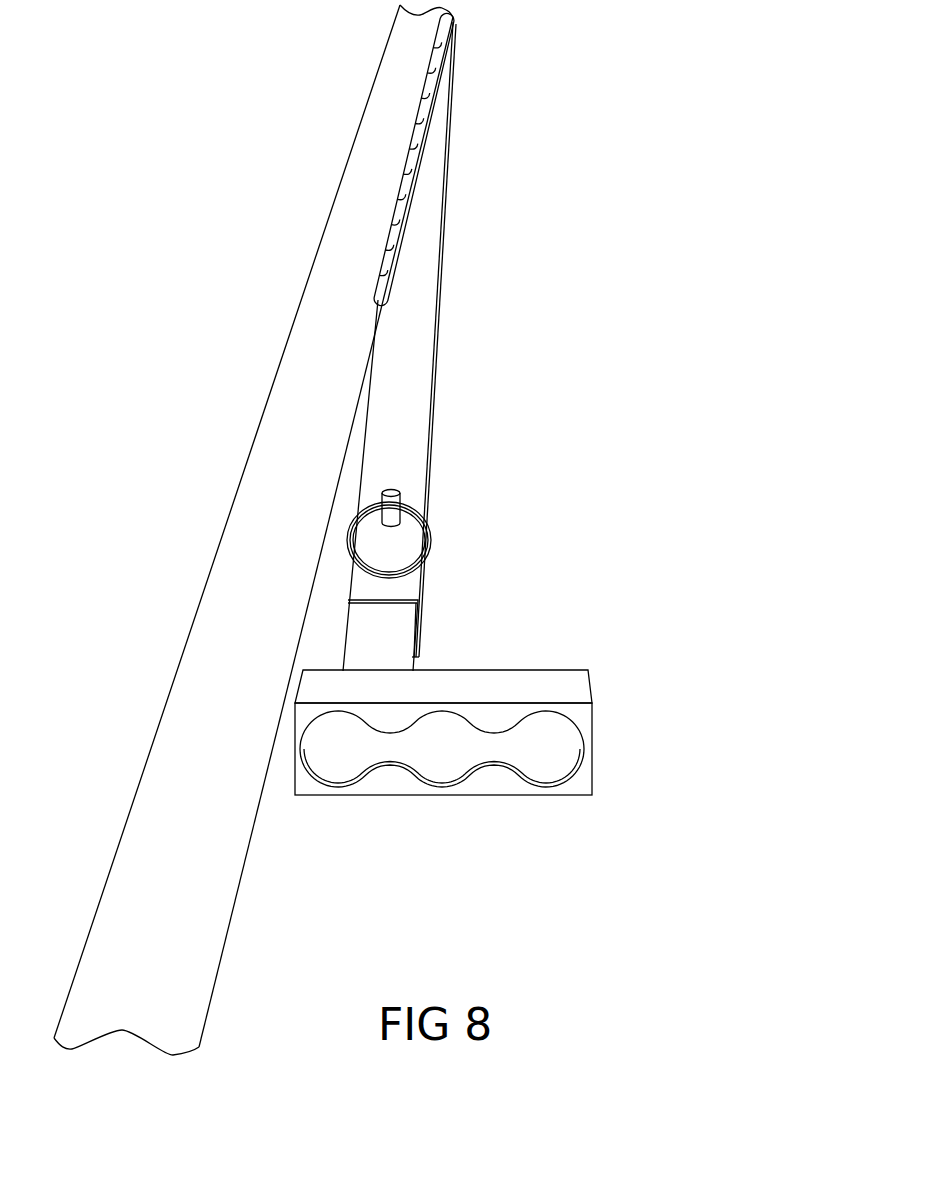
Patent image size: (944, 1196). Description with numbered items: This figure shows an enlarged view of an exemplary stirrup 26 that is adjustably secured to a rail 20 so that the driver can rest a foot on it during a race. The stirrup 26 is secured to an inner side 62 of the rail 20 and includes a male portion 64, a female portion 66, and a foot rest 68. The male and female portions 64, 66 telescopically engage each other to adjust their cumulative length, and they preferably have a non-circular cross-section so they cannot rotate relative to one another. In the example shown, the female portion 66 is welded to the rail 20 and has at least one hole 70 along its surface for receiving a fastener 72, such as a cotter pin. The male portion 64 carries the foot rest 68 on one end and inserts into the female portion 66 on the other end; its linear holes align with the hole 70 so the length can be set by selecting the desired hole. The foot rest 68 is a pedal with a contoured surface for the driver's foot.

The rail 20 is at (175, 760).
The stirrup 26 is at (467, 526).
The inner side 62 is at (441, 14).
The male portion 64 is at (395, 642).
The female portion 66 is at (409, 420).
The foot rest 68 is at (490, 785).
The hole 70 is at (392, 527).
The fastener 72 is at (393, 493).